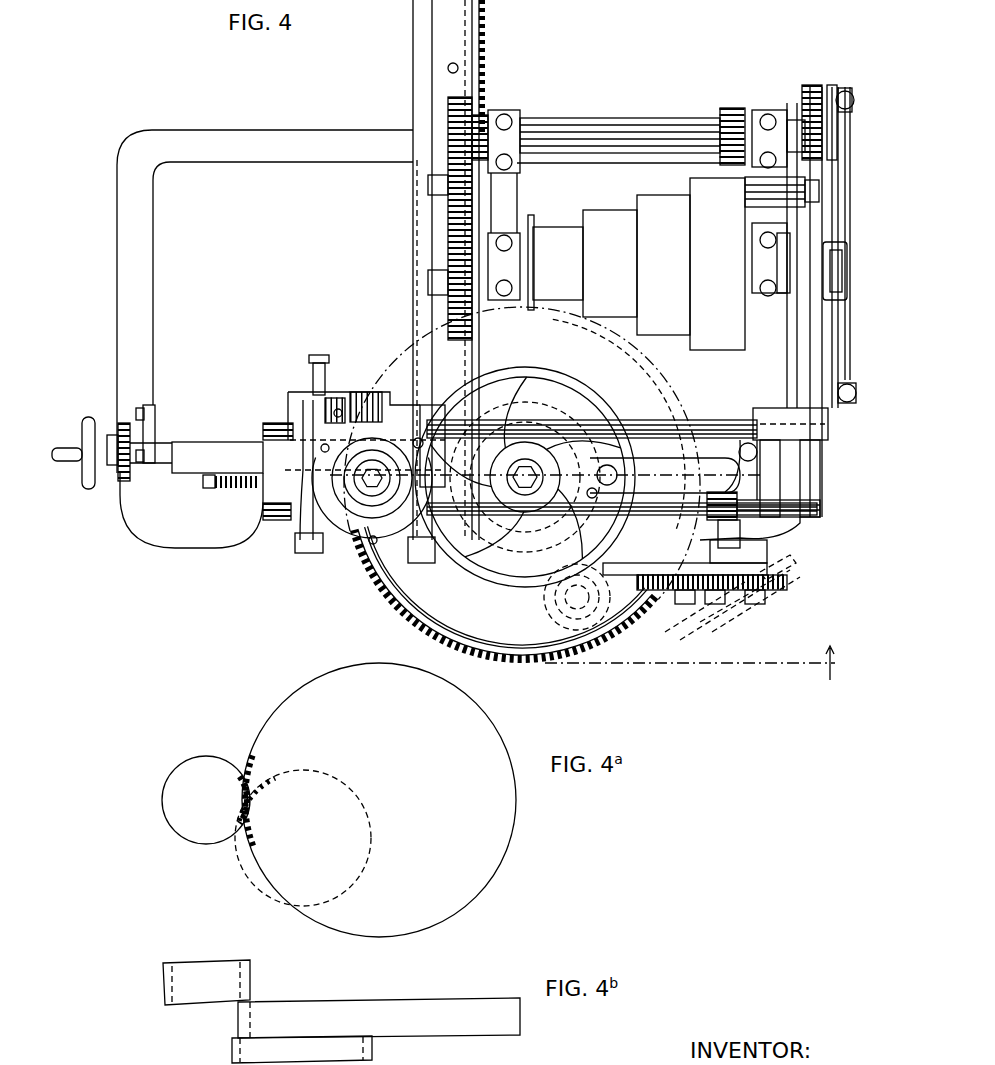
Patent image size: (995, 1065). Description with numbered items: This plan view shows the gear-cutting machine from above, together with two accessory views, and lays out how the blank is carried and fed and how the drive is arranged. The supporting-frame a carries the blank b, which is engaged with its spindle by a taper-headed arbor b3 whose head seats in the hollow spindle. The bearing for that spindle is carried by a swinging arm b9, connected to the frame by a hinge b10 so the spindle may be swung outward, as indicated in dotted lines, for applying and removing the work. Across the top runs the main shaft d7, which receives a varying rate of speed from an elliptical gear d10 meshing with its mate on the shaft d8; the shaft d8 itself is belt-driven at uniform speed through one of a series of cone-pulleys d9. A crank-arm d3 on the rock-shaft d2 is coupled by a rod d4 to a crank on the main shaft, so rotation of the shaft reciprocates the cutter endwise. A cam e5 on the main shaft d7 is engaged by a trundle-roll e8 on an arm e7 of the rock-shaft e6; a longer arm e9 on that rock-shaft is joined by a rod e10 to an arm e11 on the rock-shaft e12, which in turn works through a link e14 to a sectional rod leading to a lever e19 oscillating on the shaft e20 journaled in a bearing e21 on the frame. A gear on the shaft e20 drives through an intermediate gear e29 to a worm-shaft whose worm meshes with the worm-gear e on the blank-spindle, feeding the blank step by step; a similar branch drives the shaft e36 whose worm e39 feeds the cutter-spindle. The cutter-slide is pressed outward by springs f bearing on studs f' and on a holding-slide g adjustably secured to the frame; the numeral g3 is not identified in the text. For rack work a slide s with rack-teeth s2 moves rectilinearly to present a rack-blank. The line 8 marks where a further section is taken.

The supporting-frame a is at (265, 339).
The slide s is at (413, 32).
The rack-teeth s2 is at (480, 58).
The elliptical gear d10 is at (448, 108).
The main shaft d7 is at (644, 124).
The trundle-roll e8 is at (727, 120).
The cam e5 is at (802, 90).
The arm e7 is at (705, 163).
The rock-shaft e6 is at (818, 192).
The longer arm e9 is at (810, 180).
The shaft d8 is at (790, 252).
The rod e10 is at (806, 322).
The rod d4 is at (832, 356).
The cone-pulleys d9 is at (639, 264).
The rock-shaft d2 is at (628, 421).
The hinge b10 is at (743, 444).
The crank-arm d3 is at (822, 412).
The arm e11 is at (812, 507).
The lever e19 is at (798, 524).
The link e14 is at (762, 540).
The shaft e20 is at (745, 600).
The intermediate gear e29 is at (683, 590).
The bearing e21 is at (790, 578).
The swinging arm b9 is at (660, 515).
The taper-headed arbor b3 is at (655, 475).
The blank b is at (516, 578).
The worm-gear e is at (478, 647).
The rock-shaft e12 is at (602, 497).
The worm e39 is at (368, 395).
The shaft e36 is at (347, 398).
The holding-slide g is at (186, 470).
The hand wheel g3 is at (82, 476).
The springs f is at (237, 505).
The studs f' is at (205, 502).
The line 8 8 is at (700, 663).